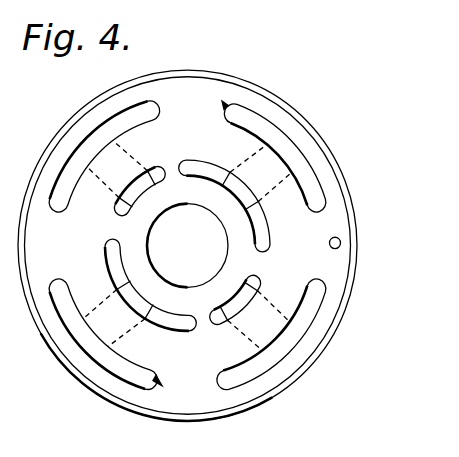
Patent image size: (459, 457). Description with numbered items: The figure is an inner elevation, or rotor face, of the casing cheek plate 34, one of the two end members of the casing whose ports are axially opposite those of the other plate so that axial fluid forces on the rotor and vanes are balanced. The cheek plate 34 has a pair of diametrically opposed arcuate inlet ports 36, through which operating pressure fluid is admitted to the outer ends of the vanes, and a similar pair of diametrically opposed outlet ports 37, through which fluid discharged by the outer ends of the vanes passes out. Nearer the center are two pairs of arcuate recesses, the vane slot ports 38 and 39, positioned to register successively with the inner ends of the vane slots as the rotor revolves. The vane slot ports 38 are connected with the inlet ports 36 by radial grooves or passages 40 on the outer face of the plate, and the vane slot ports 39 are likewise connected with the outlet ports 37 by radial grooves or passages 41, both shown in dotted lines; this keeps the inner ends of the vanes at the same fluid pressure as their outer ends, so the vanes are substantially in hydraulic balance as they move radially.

The casing cheek plate 34 is at (347, 214).
The inlet ports 36 is at (278, 137).
The outlet ports 37 is at (153, 112).
The vane slot ports 38 is at (265, 243).
The vane slot ports 39 is at (157, 170).
The radial grooves or passages 40 is at (252, 162).
The radial grooves or passages 41 is at (123, 183).